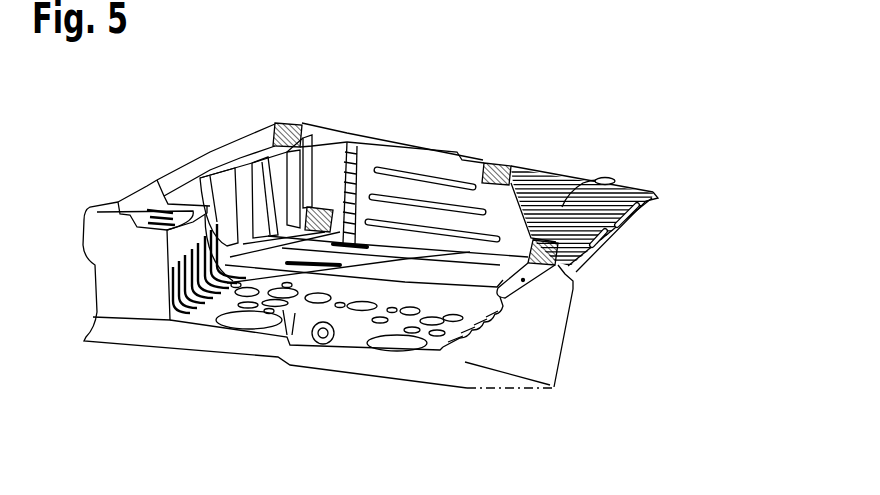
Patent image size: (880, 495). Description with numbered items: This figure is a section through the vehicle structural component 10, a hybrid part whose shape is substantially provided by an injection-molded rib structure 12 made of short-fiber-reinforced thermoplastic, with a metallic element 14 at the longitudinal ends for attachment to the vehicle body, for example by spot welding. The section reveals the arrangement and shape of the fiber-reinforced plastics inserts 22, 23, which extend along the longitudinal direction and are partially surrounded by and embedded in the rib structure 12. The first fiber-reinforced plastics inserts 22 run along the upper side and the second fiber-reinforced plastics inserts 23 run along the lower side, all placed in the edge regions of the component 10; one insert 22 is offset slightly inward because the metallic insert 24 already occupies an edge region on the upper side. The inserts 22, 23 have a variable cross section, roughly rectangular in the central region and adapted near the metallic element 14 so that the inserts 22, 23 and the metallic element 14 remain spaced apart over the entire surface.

The vehicle structural component 10 is at (683, 136).
The injection-molded rib structure 12 is at (570, 218).
The metallic element 14 is at (325, 353).
The first fiber-reinforced plastics insert 22 is at (292, 125).
The second fiber-reinforced plastics insert 23 is at (329, 207).
The metallic insert 24 is at (616, 178).